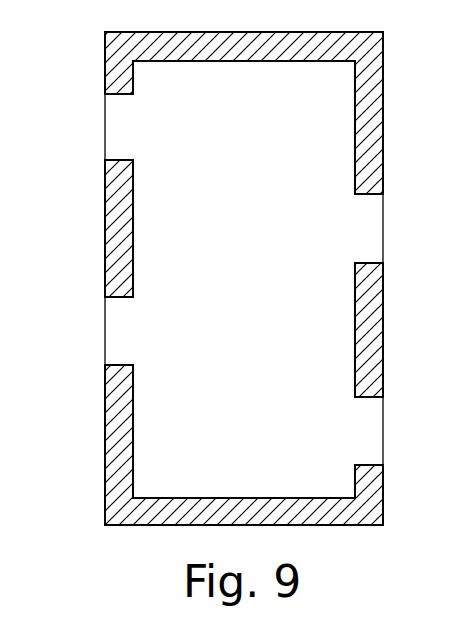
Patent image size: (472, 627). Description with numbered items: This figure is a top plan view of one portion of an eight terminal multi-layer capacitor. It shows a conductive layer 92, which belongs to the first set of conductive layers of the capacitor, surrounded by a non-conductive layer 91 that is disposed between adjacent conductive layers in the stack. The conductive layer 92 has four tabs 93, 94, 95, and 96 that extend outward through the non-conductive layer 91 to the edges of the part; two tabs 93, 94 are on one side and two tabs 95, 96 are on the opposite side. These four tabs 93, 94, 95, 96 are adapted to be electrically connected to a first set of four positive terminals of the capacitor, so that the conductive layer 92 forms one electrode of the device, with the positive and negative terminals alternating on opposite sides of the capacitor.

The non-conductive layer 91 is at (222, 42).
The conductive layer 92 is at (263, 246).
The tab 93 is at (112, 135).
The tab 94 is at (112, 334).
The tab 95 is at (373, 227).
The tab 96 is at (373, 435).